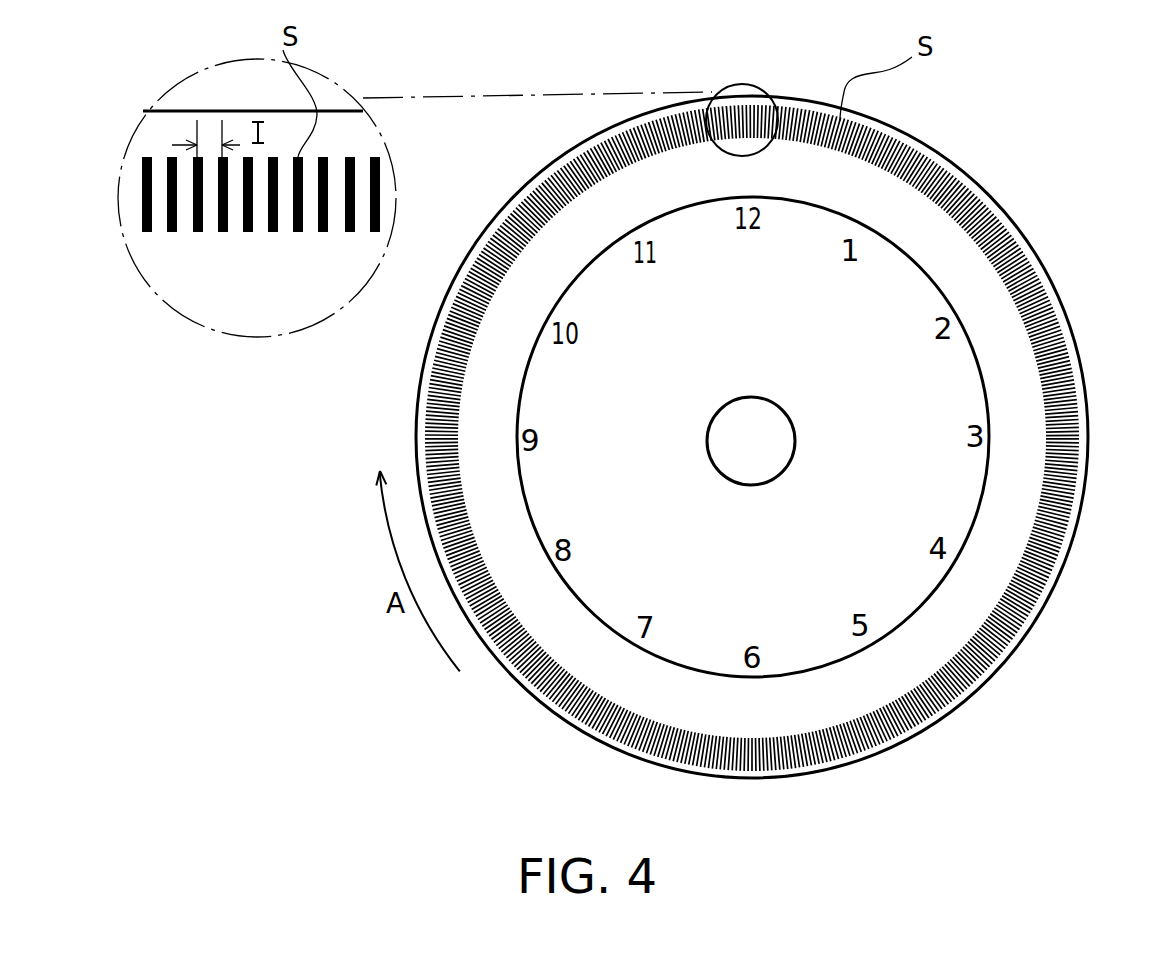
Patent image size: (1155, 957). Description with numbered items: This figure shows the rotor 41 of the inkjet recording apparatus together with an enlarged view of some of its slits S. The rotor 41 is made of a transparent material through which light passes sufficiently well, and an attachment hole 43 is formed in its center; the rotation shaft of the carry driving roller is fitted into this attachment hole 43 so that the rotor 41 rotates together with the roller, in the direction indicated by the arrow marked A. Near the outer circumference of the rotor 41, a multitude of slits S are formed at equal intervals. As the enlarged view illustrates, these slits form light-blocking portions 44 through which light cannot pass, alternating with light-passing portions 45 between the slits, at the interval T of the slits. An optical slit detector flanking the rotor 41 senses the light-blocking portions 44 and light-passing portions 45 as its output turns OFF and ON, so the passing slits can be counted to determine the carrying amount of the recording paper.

The rotor 41 is at (975, 182).
The attachment hole 43 is at (772, 413).
The light-blocking portion 44 is at (273, 232).
The light-passing portion 45 is at (285, 232).